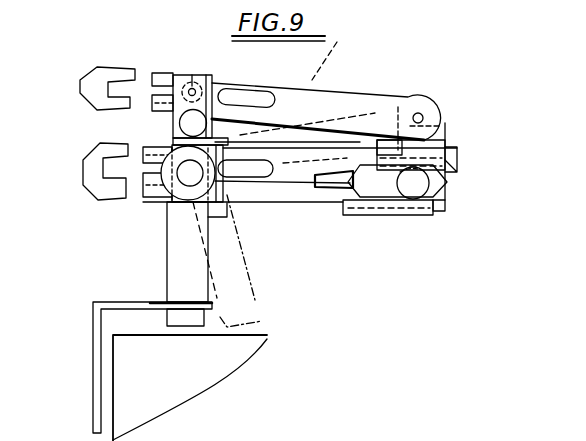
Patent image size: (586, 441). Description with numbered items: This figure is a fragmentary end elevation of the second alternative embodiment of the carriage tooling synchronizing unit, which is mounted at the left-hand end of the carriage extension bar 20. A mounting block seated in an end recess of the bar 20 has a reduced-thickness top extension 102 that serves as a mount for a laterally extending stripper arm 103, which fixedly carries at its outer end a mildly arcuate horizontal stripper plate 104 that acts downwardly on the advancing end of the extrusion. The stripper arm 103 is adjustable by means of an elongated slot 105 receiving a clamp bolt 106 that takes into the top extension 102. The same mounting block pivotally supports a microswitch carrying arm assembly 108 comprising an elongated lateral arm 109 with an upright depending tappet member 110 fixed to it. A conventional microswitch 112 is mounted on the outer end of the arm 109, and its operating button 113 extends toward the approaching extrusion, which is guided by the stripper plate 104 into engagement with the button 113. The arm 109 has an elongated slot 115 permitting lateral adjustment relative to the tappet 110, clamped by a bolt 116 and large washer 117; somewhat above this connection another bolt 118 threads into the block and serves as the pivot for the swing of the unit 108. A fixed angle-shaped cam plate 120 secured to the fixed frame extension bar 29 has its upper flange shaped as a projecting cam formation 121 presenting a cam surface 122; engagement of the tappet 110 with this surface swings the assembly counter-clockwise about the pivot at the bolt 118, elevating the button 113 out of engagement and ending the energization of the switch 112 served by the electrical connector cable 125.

The carriage extension bar 20 is at (218, 212).
The fixed frame extension bar 29 is at (105, 388).
The top extension 102 is at (190, 390).
The stripper arm 103 is at (93, 80).
The stripper plate 104 is at (440, 147).
The elongated slot 105 is at (222, 90).
The clamp bolt 106 is at (186, 76).
The microswitch carrying arm assembly 108 is at (468, 148).
The arm 109 is at (92, 169).
The tappet member 110 is at (193, 281).
The microswitch 112 is at (440, 188).
The operating button 113 is at (392, 216).
The elongated slot 115 is at (113, 173).
The bolt 116 is at (178, 190).
The washer 117 is at (190, 175).
The bolt 118 is at (197, 123).
The cam plate 120 is at (120, 300).
The cam formation 121 is at (183, 326).
The cam surface 122 is at (218, 305).
The electrical connector cable 125 is at (343, 180).